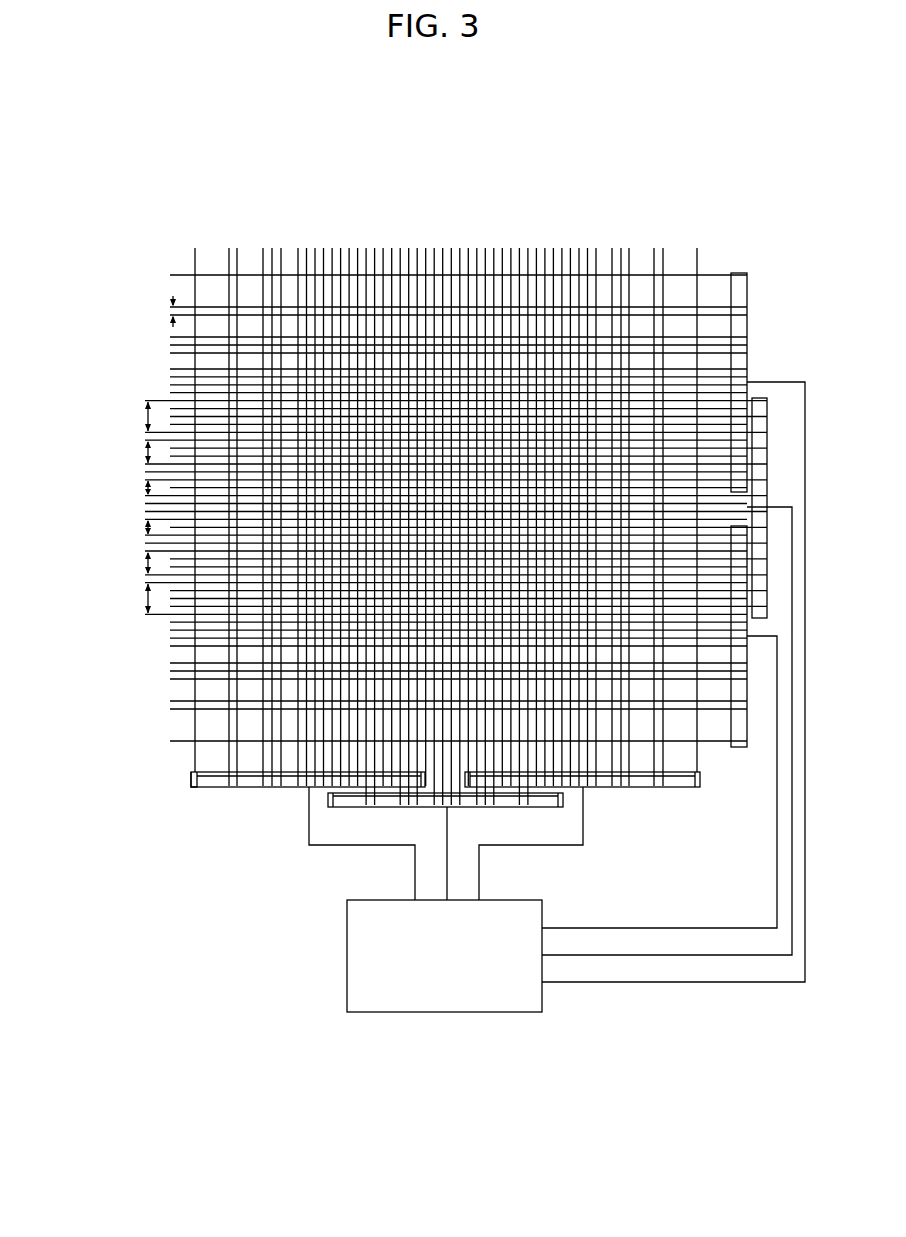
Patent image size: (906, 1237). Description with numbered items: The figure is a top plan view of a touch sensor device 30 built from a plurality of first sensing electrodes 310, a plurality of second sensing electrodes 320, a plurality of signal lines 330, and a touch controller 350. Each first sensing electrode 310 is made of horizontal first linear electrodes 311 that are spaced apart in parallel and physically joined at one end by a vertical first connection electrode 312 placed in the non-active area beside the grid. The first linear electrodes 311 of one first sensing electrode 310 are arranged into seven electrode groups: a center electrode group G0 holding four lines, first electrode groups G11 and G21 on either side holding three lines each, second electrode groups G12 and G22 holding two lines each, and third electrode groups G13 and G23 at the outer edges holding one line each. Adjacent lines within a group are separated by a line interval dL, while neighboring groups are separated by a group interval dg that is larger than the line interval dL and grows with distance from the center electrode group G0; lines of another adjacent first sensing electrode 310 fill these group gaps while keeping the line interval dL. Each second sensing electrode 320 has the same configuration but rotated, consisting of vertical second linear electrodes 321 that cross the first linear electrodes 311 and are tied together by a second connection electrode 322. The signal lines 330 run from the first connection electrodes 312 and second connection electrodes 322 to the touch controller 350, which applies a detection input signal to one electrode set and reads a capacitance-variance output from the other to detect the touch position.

The touch sensor device 30 is at (188, 214).
The first sensing electrode 310 is at (805, 208).
The first linear electrode 311 is at (727, 273).
The first connection electrode 312 is at (752, 300).
The second sensing electrode 320 is at (132, 854).
The second linear electrode 321 is at (193, 762).
The second connection electrode 322 is at (213, 788).
The signal line 330 is at (686, 984).
The touch controller 350 is at (345, 956).
The line interval dL is at (157, 311).
The group interval dg is at (132, 508).
The third electrode group G23 is at (118, 397).
The second electrode group G22 is at (118, 434).
The first electrode group G21 is at (118, 467).
The center electrode group G0 is at (118, 503).
The first electrode group G11 is at (118, 539).
The second electrode group G12 is at (118, 575).
The third electrode group G13 is at (118, 610).